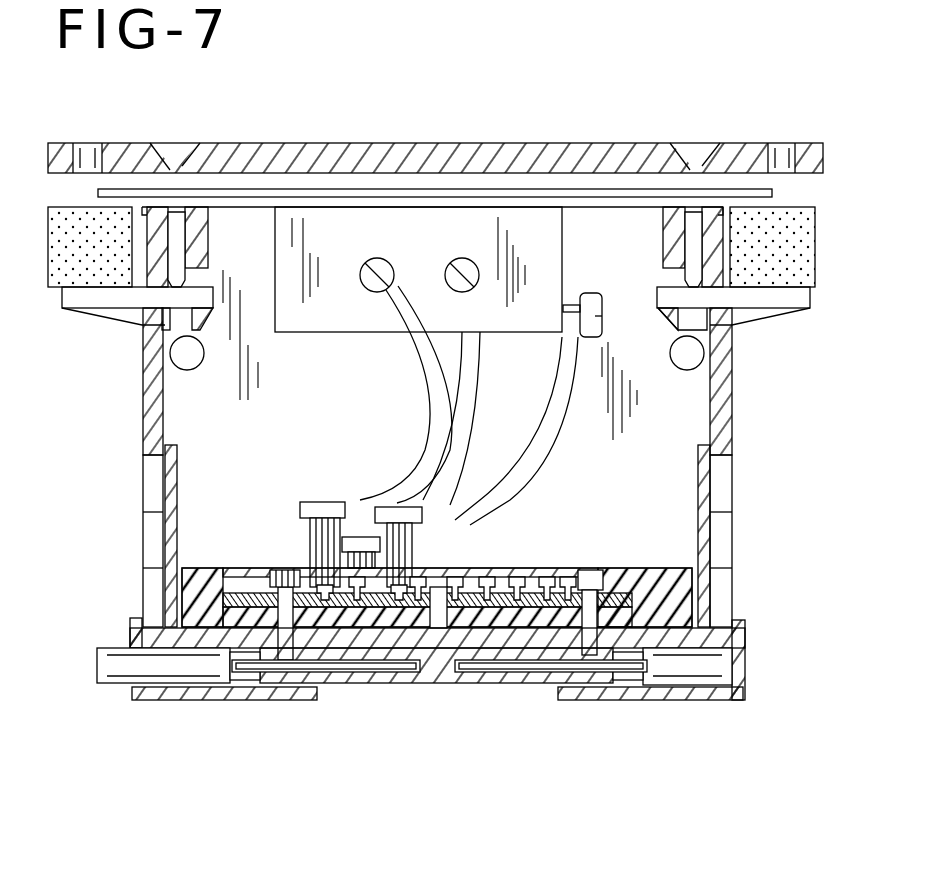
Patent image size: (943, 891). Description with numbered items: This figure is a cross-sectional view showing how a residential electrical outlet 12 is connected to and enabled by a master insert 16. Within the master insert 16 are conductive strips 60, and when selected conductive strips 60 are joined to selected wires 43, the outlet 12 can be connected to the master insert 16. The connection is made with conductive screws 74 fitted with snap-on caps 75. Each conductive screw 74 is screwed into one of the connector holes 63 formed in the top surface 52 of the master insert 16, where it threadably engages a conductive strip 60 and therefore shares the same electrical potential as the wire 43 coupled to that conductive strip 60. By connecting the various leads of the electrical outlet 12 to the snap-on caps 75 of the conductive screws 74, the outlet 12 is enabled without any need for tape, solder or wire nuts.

The residential electrical outlet 12 is at (331, 316).
The master insert 16 is at (683, 600).
The wire 43 is at (253, 667).
The top surface 52 is at (637, 568).
The conductive strip 60 is at (570, 576).
The connector hole 63 is at (483, 578).
The conductive screw 74 is at (303, 547).
The snap-on cap 75 is at (320, 500).